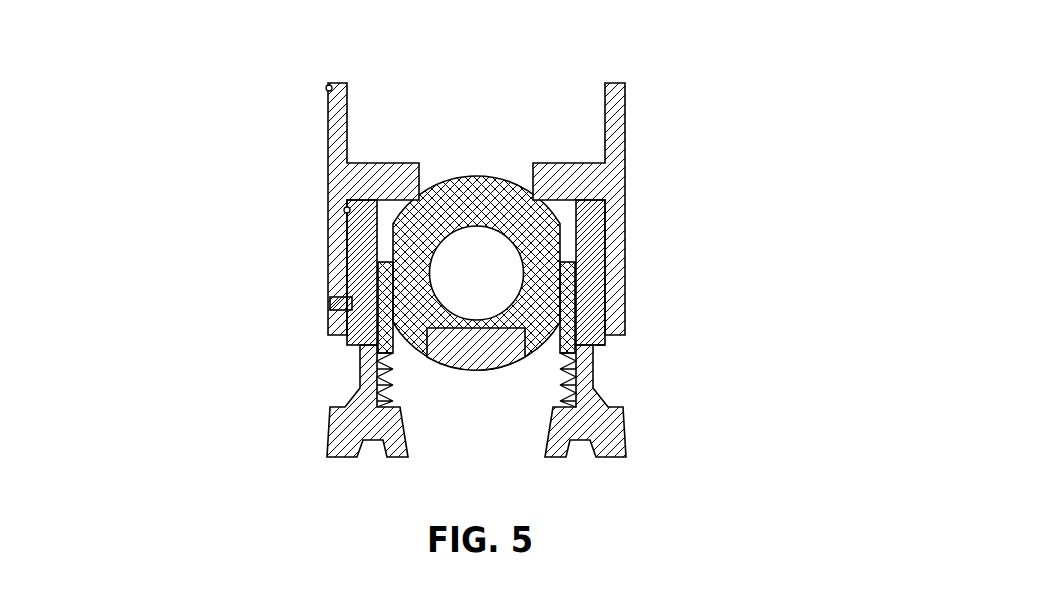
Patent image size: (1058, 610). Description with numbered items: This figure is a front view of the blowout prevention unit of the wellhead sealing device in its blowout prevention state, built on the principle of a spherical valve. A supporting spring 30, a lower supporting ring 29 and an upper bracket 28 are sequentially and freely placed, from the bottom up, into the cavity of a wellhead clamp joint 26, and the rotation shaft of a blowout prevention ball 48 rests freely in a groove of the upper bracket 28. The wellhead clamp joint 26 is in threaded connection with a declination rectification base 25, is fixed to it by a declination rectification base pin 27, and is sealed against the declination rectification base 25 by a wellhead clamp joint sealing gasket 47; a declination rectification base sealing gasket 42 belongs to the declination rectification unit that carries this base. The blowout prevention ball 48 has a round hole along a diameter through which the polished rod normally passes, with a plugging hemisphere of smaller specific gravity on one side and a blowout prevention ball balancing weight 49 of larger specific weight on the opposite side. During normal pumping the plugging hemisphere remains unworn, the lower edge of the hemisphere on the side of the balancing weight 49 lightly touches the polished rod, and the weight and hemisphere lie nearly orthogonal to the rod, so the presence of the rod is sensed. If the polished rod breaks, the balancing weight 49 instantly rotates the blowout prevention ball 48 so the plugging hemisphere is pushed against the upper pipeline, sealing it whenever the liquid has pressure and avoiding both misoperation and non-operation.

The declination rectification base 25 is at (344, 210).
The wellhead clamp joint 26 is at (356, 250).
The declination rectification base pin 27 is at (330, 302).
The upper bracket 28 is at (347, 318).
The lower supporting ring 29 is at (377, 355).
The supporting spring 30 is at (360, 390).
The declination rectification base sealing gasket 42 is at (625, 87).
The wellhead clamp joint sealing gasket 47 is at (603, 211).
The blowout prevention ball 48 is at (553, 274).
The blowout prevention ball balancing weight 49 is at (605, 342).